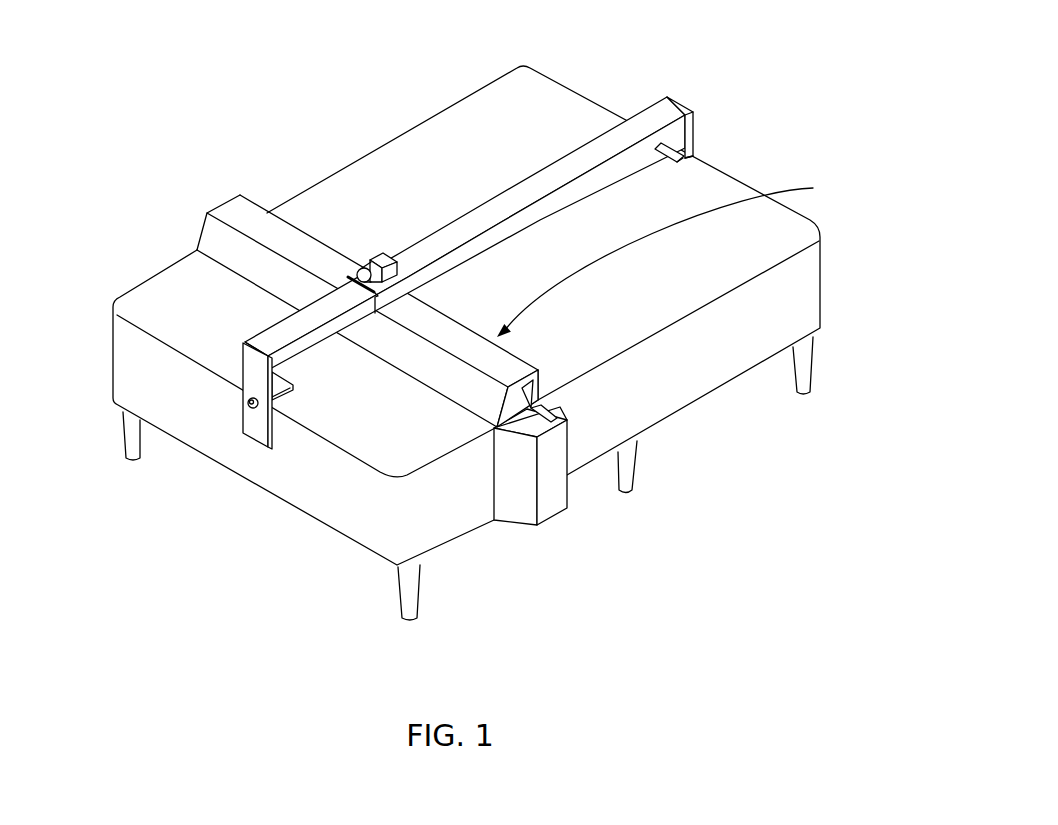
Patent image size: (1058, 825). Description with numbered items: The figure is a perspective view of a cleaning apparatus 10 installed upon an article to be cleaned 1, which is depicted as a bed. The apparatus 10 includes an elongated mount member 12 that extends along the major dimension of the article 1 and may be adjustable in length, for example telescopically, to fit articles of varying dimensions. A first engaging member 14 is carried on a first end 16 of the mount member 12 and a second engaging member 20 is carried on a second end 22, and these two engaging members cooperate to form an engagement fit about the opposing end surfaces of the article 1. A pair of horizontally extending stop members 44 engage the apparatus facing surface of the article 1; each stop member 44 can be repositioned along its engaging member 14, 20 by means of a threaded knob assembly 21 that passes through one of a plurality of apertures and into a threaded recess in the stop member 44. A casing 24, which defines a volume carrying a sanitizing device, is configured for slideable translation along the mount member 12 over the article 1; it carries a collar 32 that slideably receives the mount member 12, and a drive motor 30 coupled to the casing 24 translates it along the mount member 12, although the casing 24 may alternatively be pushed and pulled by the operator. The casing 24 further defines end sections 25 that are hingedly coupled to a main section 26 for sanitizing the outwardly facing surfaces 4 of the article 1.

The article to be cleaned 1 is at (820, 298).
The outwardly facing surfaces 4 is at (440, 517).
The cleaning apparatus 10 is at (416, 285).
The mount member 12 is at (647, 120).
The first engaging member 14 is at (250, 395).
The first end 16 is at (245, 342).
The second engaging member 20 is at (695, 132).
The threaded knob assembly 21 is at (250, 404).
The second end 22 is at (685, 100).
The casing 24 is at (671, 255).
The end sections 25 is at (547, 493).
The main section 26 is at (443, 373).
The drive motor 30 is at (366, 255).
The collar 32 is at (405, 268).
The horizontally extending stop members 44 is at (690, 166).